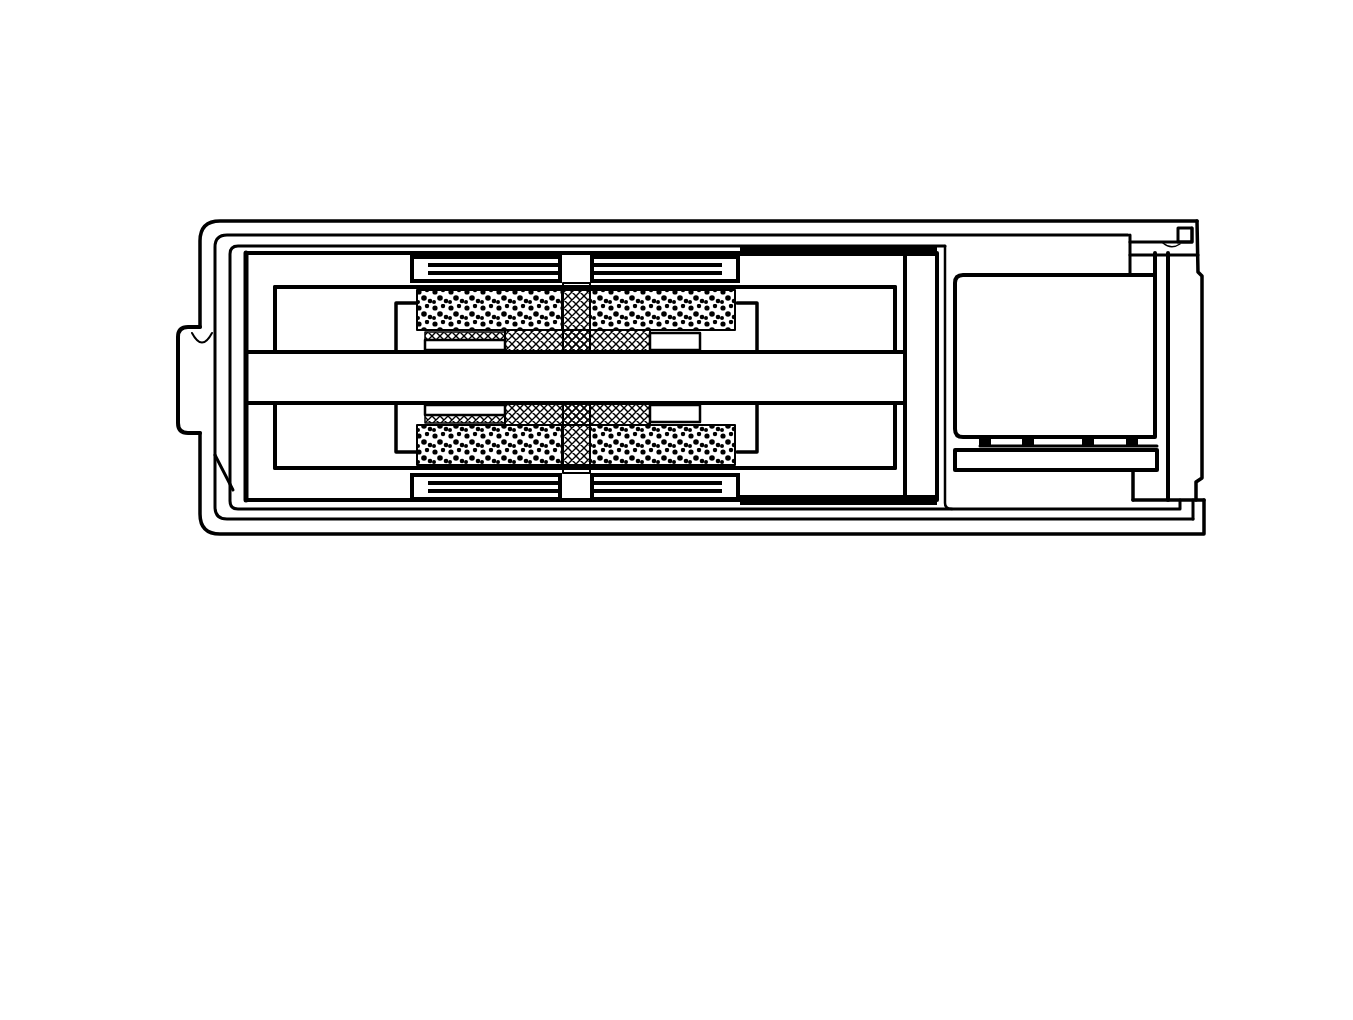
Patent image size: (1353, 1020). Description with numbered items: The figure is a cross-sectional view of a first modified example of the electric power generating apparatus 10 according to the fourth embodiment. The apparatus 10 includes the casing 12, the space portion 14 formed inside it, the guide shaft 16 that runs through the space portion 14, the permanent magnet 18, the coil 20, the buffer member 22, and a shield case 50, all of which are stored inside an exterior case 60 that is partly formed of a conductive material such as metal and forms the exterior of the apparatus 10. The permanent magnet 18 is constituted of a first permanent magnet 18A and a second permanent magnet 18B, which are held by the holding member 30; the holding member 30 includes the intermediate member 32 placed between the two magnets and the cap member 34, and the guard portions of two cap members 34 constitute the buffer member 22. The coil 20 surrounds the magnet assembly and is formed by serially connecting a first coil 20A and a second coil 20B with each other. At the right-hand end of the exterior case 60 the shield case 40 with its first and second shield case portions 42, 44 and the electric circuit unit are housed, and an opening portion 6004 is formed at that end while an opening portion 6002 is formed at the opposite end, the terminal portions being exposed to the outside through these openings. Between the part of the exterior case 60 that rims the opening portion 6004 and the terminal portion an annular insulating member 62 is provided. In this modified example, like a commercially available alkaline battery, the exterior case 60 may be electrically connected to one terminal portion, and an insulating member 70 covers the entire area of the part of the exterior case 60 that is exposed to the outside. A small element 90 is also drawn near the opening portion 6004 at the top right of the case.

The electric power generating apparatus 10 is at (760, 144).
The casing 12 is at (818, 480).
The space portion 14 is at (215, 525).
The guide shaft 16 is at (317, 407).
The permanent magnet 18 is at (480, 321).
The first permanent magnet 18A is at (413, 296).
The second permanent magnet 18B is at (752, 285).
The coil 20 is at (550, 329).
The first coil 20A is at (500, 257).
The second coil 20B is at (617, 253).
The buffer member 22 is at (760, 333).
The holding member 30 is at (383, 440).
The intermediate member 32 is at (584, 470).
The cap member 34 is at (635, 316).
The shield case 40 is at (1089, 339).
The first shield case portion 42 is at (1089, 339).
The second shield case portion 44 is at (1082, 322).
The shield case 50 is at (860, 266).
The exterior case 60 is at (1050, 232).
The annular insulating member 62 is at (1207, 365).
The insulating member 70 is at (1003, 533).
The seal 90 is at (1203, 243).
The opening portion 6002 is at (187, 330).
The opening portion 6004 is at (1205, 242).